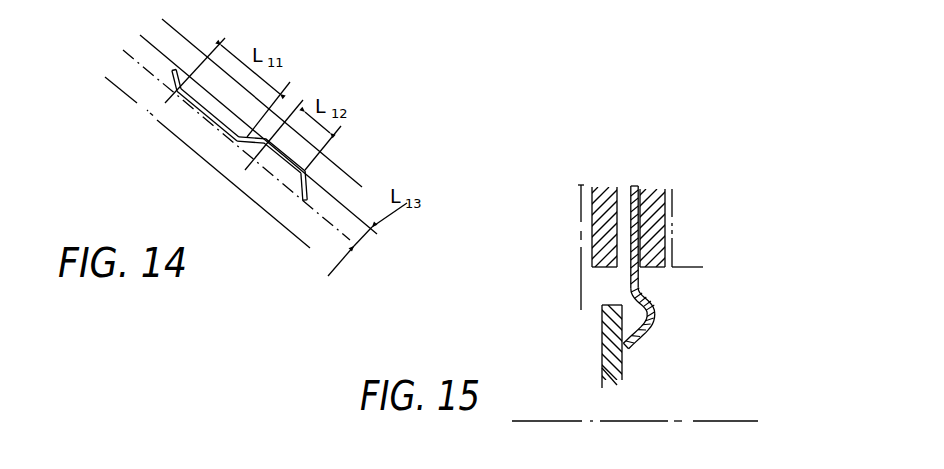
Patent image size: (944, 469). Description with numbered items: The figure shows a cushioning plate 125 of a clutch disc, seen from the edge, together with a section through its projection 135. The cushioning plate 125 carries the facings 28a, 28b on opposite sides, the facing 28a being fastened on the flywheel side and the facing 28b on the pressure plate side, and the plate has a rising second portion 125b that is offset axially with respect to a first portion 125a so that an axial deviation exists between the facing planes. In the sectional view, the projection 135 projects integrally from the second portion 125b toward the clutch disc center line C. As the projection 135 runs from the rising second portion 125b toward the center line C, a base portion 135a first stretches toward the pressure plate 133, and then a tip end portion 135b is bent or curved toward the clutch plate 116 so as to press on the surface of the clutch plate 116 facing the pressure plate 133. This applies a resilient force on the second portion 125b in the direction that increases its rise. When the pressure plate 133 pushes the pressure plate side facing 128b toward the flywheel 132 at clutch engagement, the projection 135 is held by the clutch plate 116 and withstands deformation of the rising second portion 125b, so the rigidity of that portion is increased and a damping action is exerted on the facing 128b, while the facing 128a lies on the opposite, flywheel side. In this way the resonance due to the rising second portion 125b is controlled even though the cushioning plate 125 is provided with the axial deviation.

In FIG. 14, the facing 28a is at (128, 97).
In FIG. 14, the facing 28b is at (199, 29).
In FIG. 14, the cushioning plate 125 is at (207, 168).
In FIG. 14, the clip first portion 125a is at (200, 116).
In FIG. 14, the second portion 125b is at (282, 162).
In FIG. 15, the second portion 125b is at (684, 239).
In FIG. 15, the flywheel 132 is at (582, 184).
In FIG. 15, the first guide member 128a is at (602, 193).
In FIG. 15, the facing 128b is at (653, 190).
In FIG. 15, the pressure plate 133 is at (676, 230).
In FIG. 15, the projection 135 is at (684, 320).
In FIG. 15, the first bend 135a is at (649, 300).
In FIG. 15, the tip end portion 135b is at (645, 338).
In FIG. 15, the clutch plate 116 is at (601, 348).
In FIG. 15, the clutch disc center line C is at (725, 421).